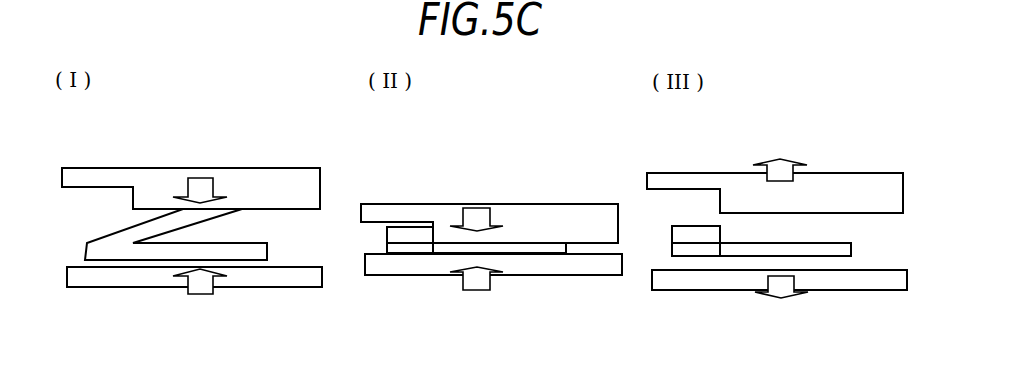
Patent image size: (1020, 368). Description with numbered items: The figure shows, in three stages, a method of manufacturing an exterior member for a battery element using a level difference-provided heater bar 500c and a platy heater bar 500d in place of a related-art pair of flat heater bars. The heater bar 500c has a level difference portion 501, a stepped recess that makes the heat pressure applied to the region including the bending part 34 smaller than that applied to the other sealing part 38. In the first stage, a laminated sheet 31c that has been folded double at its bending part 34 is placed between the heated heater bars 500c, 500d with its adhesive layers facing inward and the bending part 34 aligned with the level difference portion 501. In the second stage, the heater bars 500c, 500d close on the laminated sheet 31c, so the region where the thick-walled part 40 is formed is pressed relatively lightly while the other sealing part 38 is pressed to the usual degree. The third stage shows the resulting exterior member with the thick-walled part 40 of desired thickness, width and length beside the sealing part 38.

The level difference-provided heater bar 500c is at (265, 170).
The heater bar 500d is at (300, 290).
The level difference portion 501 is at (83, 186).
The laminated sheet 31c is at (267, 247).
The bending part 34 is at (88, 247).
The other sealing part 38 is at (547, 250).
The thick-walled part 40 is at (417, 245).